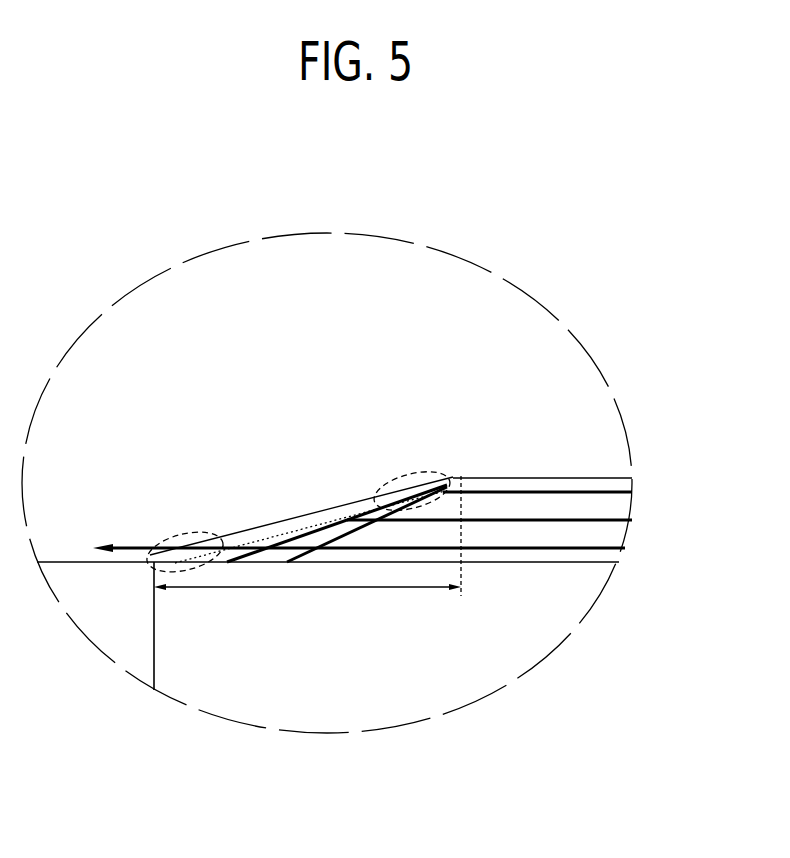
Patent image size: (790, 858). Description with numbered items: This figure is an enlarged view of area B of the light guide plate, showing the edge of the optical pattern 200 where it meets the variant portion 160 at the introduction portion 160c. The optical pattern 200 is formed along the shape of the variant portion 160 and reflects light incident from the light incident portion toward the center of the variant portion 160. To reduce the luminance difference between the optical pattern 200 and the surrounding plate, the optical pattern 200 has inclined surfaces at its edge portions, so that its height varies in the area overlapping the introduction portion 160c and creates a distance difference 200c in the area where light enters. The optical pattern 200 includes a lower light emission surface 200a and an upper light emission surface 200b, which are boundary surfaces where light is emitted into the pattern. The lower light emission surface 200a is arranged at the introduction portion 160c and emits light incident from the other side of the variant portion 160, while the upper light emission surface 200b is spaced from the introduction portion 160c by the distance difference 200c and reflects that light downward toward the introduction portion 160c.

The area B is at (380, 237).
The variant portion 160 is at (568, 604).
The introduction portion 160c is at (218, 612).
The optical pattern 200 is at (612, 522).
The lower light emission surface 200a is at (203, 535).
The upper light emission surface 200b is at (413, 472).
The distance difference 200c is at (307, 546).